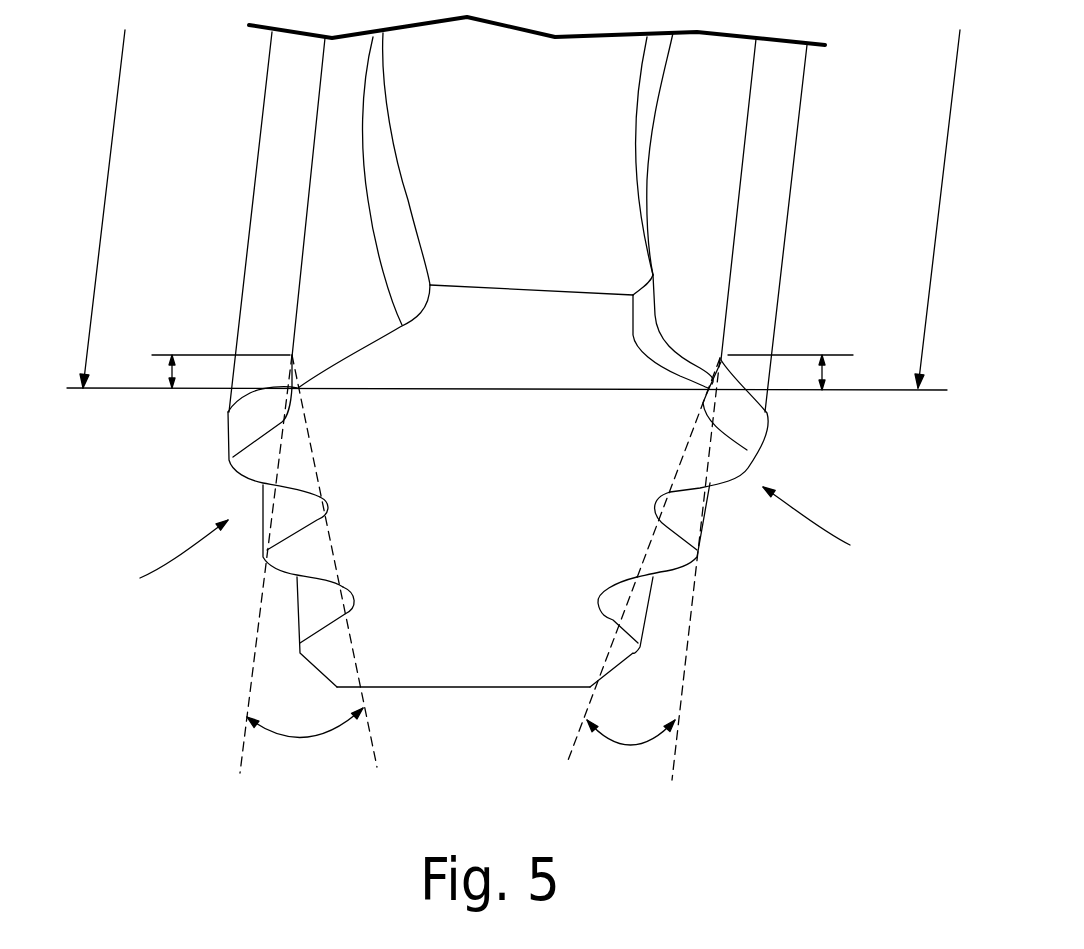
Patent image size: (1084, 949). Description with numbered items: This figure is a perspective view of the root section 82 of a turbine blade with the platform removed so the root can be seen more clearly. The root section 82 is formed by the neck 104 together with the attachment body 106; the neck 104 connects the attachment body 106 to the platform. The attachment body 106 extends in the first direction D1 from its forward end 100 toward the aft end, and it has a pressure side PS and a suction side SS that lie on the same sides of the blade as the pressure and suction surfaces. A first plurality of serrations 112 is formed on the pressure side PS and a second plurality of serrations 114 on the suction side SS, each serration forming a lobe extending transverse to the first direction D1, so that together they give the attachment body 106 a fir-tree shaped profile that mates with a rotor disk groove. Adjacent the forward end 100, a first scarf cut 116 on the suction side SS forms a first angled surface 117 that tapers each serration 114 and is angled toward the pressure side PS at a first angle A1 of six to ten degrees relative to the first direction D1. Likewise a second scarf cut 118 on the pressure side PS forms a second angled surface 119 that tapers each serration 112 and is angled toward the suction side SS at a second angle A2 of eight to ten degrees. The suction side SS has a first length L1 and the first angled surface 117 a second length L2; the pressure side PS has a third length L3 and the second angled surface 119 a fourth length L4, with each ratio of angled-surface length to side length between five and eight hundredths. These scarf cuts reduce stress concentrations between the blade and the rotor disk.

The root section 82 is at (470, 360).
The forward end 100 is at (473, 640).
The neck 104 is at (653, 280).
The attachment body 106 is at (467, 508).
The first plurality of serrations 112 is at (762, 240).
The second plurality of serrations 114 is at (257, 163).
The first scarf cut 116 is at (243, 428).
The first angled surface 117 is at (292, 517).
The second scarf cut 118 is at (747, 420).
The second angled surface 119 is at (633, 607).
The first length L1 is at (105, 198).
The second length L2 is at (168, 373).
The third length L3 is at (947, 140).
The fourth length L4 is at (822, 375).
The first direction D1 is at (250, 685).
The first angle A1 is at (303, 737).
The second angle A2 is at (627, 747).
The suction side SS is at (161, 559).
The pressure side PS is at (826, 527).